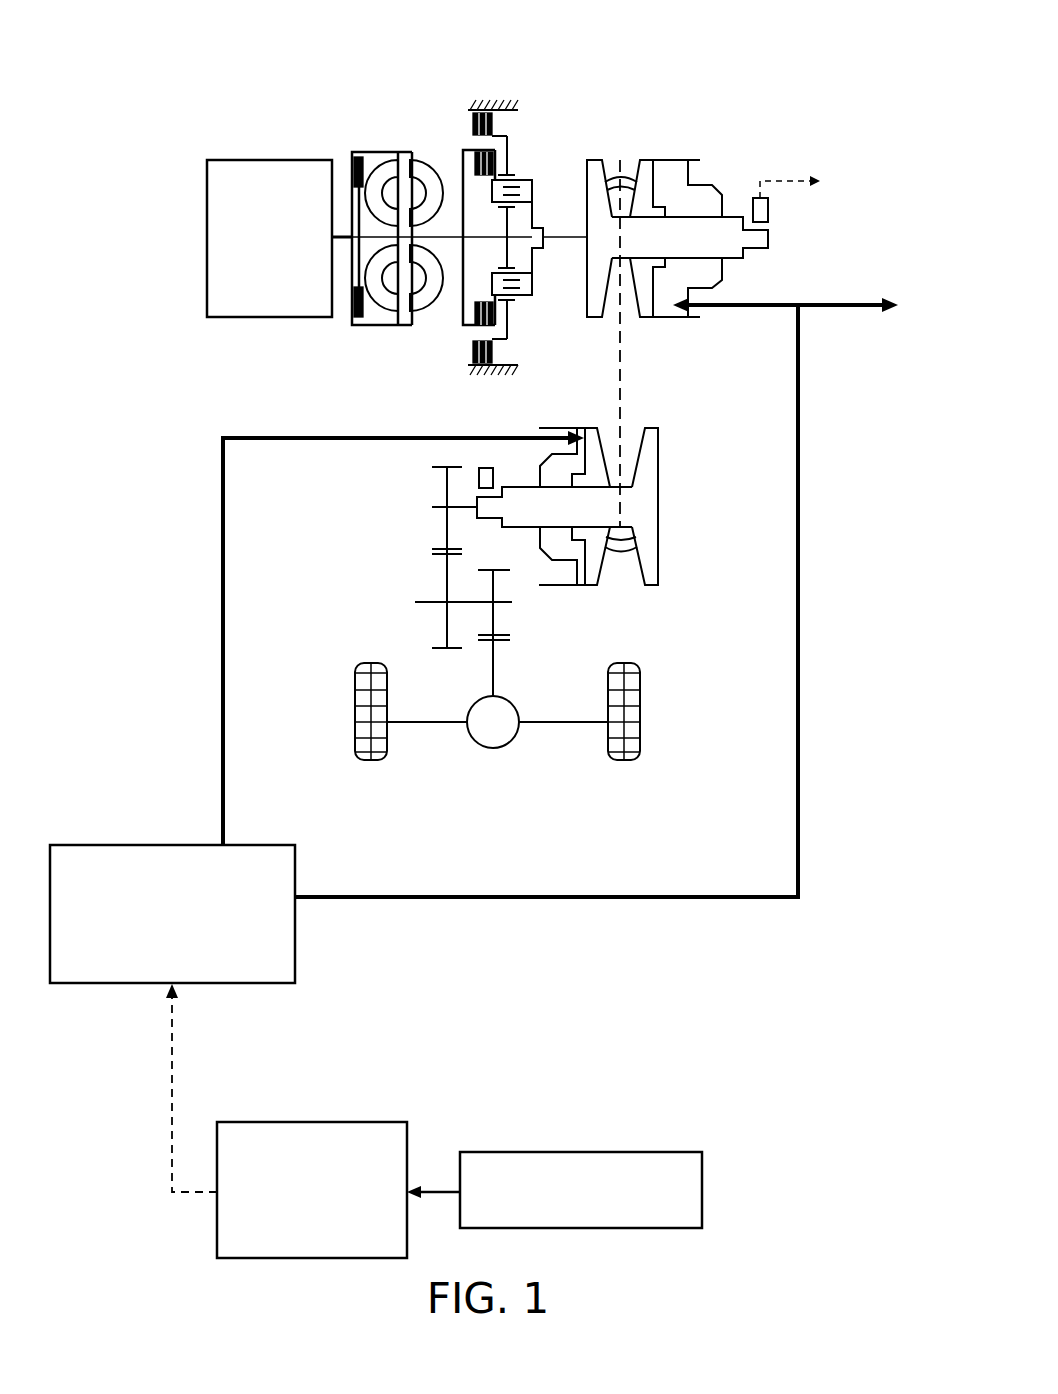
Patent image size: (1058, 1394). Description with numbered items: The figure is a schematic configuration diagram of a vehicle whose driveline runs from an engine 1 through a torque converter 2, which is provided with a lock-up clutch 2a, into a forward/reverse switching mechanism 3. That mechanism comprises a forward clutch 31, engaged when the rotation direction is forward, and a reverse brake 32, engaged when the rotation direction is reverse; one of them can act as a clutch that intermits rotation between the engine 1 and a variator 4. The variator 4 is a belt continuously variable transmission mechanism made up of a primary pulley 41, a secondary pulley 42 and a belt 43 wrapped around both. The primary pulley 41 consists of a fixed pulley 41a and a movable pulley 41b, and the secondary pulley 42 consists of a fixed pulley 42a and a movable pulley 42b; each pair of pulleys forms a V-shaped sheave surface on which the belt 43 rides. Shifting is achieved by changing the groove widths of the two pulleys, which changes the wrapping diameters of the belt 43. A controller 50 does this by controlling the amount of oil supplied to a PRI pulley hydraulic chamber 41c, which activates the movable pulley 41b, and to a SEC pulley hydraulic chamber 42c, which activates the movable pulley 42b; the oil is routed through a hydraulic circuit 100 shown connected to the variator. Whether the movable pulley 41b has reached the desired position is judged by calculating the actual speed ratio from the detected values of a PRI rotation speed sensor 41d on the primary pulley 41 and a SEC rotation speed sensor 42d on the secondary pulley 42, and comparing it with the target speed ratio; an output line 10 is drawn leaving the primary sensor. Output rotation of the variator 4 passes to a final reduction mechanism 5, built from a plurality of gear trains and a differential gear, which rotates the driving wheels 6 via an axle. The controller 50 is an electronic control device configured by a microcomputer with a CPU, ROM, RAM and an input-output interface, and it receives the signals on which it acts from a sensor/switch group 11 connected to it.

The engine 1 is at (255, 160).
The torque converter 2 is at (400, 122).
The lock-up clutch 2a is at (358, 157).
The forward/reverse switching mechanism 3 is at (506, 190).
The forward clutch 31 is at (470, 150).
The reverse brake 32 is at (498, 100).
The variator 4 is at (620, 85).
The primary pulley 41 is at (699, 193).
The fixed pulley 41a is at (595, 160).
The movable pulley 41b is at (645, 160).
The PRI pulley hydraulic chamber 41c is at (670, 178).
The PRI rotation speed sensor 41d is at (770, 208).
The sensor output signal 10 is at (804, 184).
The secondary pulley 42 is at (607, 520).
The fixed pulley 42a is at (660, 443).
The movable pulley 42b is at (593, 587).
The SEC pulley hydraulic chamber 42c is at (565, 555).
The SEC rotation speed sensor 42d is at (493, 470).
The belt 43 is at (630, 552).
The final reduction mechanism 5 is at (398, 570).
The driving wheels 6 is at (355, 727).
The hydraulic circuit 100 is at (170, 843).
The controller 50 is at (305, 1120).
The sensor/switch group 11 is at (702, 1178).